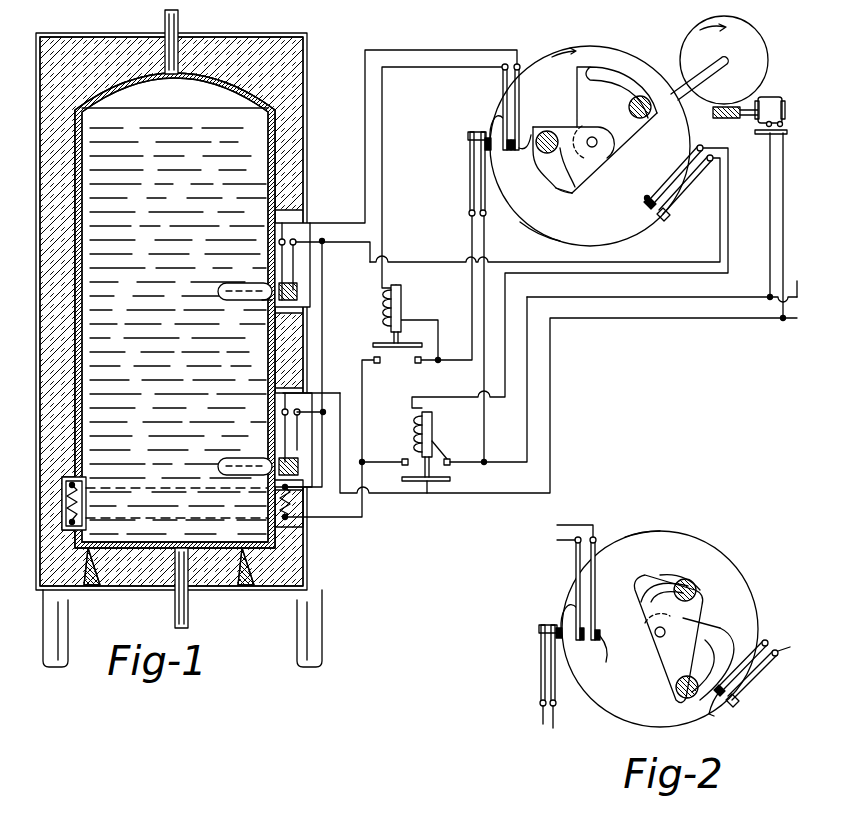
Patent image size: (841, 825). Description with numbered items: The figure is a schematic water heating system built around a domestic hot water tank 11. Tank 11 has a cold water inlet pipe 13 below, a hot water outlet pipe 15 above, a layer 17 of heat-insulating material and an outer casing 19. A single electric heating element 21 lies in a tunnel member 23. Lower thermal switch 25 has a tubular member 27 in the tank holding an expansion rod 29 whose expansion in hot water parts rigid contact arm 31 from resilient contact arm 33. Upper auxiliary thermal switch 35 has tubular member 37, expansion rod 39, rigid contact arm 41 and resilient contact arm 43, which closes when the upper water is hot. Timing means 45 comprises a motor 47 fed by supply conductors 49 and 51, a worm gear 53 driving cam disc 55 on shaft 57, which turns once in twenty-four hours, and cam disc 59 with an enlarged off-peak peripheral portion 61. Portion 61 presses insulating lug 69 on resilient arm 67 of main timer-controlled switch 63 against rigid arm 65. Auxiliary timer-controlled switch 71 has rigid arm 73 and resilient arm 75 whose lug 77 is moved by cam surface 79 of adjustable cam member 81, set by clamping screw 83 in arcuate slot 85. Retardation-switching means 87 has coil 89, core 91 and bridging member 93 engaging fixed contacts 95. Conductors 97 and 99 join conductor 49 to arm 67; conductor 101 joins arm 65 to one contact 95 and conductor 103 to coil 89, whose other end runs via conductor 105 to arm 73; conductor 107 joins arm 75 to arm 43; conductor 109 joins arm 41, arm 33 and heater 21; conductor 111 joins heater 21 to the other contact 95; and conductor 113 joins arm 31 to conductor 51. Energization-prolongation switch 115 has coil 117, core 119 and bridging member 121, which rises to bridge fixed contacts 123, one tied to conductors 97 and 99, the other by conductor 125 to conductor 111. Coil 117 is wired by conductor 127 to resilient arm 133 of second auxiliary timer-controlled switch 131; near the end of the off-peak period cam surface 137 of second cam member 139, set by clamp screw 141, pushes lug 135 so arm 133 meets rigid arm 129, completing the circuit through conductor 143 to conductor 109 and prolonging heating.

In FIG. 1, the hot water tank 11 is at (266, 180).
In FIG. 1, the cold water inlet pipe 13 is at (190, 605).
In FIG. 1, the hot water outlet pipe 15 is at (180, 26).
In FIG. 1, the layer of heat-insulating material 17 is at (290, 137).
In FIG. 1, the outer casing 19 is at (307, 73).
In FIG. 1, the electric heating element 21 is at (300, 528).
In FIG. 1, the tunnel member 23 is at (88, 510).
In FIG. 1, the lower thermal heater control switch 25 is at (227, 450).
In FIG. 1, the tubular member 27 is at (230, 478).
In FIG. 1, the expansion rod 29 is at (269, 502).
In FIG. 1, the relatively rigid contact arm 31 is at (283, 425).
In FIG. 1, the resilient contact arm 33 is at (298, 440).
In FIG. 1, the auxiliary thermal control switch 35 is at (228, 272).
In FIG. 1, the tubular member 37 is at (248, 303).
In FIG. 1, the expansion rod 39 is at (300, 301).
In FIG. 1, the relatively rigid contact arm 41 is at (322, 270).
In FIG. 1, the resilient contact arm 43 is at (275, 250).
In FIG. 1, the continuously operative timing means 45 is at (723, 77).
In FIG. 1, the electric motor 47 is at (780, 97).
In FIG. 1, the supply circuit conductor 49 is at (795, 275).
In FIG. 1, the supply circuit conductor 51 is at (785, 321).
In FIG. 1, the worm gear 53 is at (735, 123).
In FIG. 1, the cam disc 55 is at (764, 41).
In FIG. 1, the shaft 57 is at (683, 80).
In FIG. 1, the cam disc 59 is at (586, 45).
In FIG. 2, the cam disc 59 is at (632, 726).
In FIG. 1, the peripheral portion of greater radius 61 is at (541, 230).
In FIG. 2, the peripheral portion of greater radius 61 is at (636, 529).
In FIG. 1, the main timer-controlled heater-control switch 63 is at (472, 174).
In FIG. 2, the main timer-controlled heater-control switch 63 is at (546, 657).
In FIG. 1, the relatively rigid contact arm 65 is at (469, 186).
In FIG. 2, the relatively rigid contact arm 65 is at (540, 658).
In FIG. 1, the resilient contact arm 67 is at (487, 206).
In FIG. 2, the resilient contact arm 67 is at (556, 688).
In FIG. 1, the lug 69 is at (493, 124).
In FIG. 2, the lug 69 is at (562, 612).
In FIG. 1, the auxiliary timer-controlled switch 71 is at (508, 116).
In FIG. 2, the auxiliary timer-controlled switch 71 is at (577, 594).
In FIG. 1, the relatively rigid contact arm 73 is at (502, 86).
In FIG. 2, the relatively rigid contact arm 73 is at (574, 568).
In FIG. 1, the resilient contact arm 75 is at (517, 104).
In FIG. 2, the resilient contact arm 75 is at (598, 606).
In FIG. 1, the lug 77 is at (499, 169).
In FIG. 1, the cam surface 79 is at (545, 163).
In FIG. 2, the cam surface 79 is at (675, 566).
In FIG. 1, the adjustable cam member 81 is at (587, 189).
In FIG. 2, the adjustable cam member 81 is at (636, 618).
In FIG. 1, the clamping screw 83 is at (549, 130).
In FIG. 2, the clamping screw 83 is at (698, 590).
In FIG. 1, the arcuate slot 85 is at (572, 196).
In FIG. 2, the arcuate slot 85 is at (650, 585).
In FIG. 1, the electromagnetic retardation-switching means 87 is at (393, 325).
In FIG. 1, the coil 89 is at (404, 303).
In FIG. 1, the magnetizable core 91 is at (380, 326).
In FIG. 1, the contact bridging member 93 is at (375, 345).
In FIG. 1, the fixed contact members 95 is at (383, 364).
In FIG. 1, the conductor 97 is at (657, 297).
In FIG. 1, the conductor 99 is at (489, 440).
In FIG. 2, the conductor 99 is at (556, 716).
In FIG. 1, the conductor 101 is at (470, 229).
In FIG. 2, the conductor 101 is at (541, 724).
In FIG. 1, the conductor 103 is at (439, 335).
In FIG. 1, the conductor 105 is at (383, 168).
In FIG. 1, the conductor 107 is at (436, 50).
In FIG. 1, the conductor 109 is at (323, 366).
In FIG. 1, the conductor 111 is at (363, 420).
In FIG. 1, the conductor 113 is at (340, 392).
In FIG. 1, the energization-prolongation electromagnetic switch 115 is at (436, 463).
In FIG. 1, the coil 117 is at (414, 433).
In FIG. 1, the magnetizable core 119 is at (436, 453).
In FIG. 1, the contact bridging member 121 is at (427, 494).
In FIG. 1, the fixed contact members 123 is at (403, 467).
In FIG. 1, the conductor 125 is at (392, 461).
In FIG. 1, the conductor 127 is at (445, 396).
In FIG. 2, the conductor 127 is at (786, 648).
In FIG. 1, the relatively rigid contact arm 129 is at (683, 190).
In FIG. 2, the relatively rigid contact arm 129 is at (752, 686).
In FIG. 1, the second auxiliary timer-controlled switch 131 is at (662, 192).
In FIG. 2, the second auxiliary timer-controlled switch 131 is at (747, 671).
In FIG. 1, the resilient contact arm 133 is at (668, 181).
In FIG. 2, the resilient contact arm 133 is at (768, 636).
In FIG. 1, the lug 135 is at (647, 199).
In FIG. 2, the lug 135 is at (709, 716).
In FIG. 1, the cam surface 137 is at (608, 62).
In FIG. 2, the cam surface 137 is at (745, 628).
In FIG. 1, the second cam member 139 is at (621, 160).
In FIG. 2, the second cam member 139 is at (651, 650).
In FIG. 1, the clamp screw 141 is at (650, 112).
In FIG. 2, the clamp screw 141 is at (676, 693).
In FIG. 1, the conductor 143 is at (428, 257).